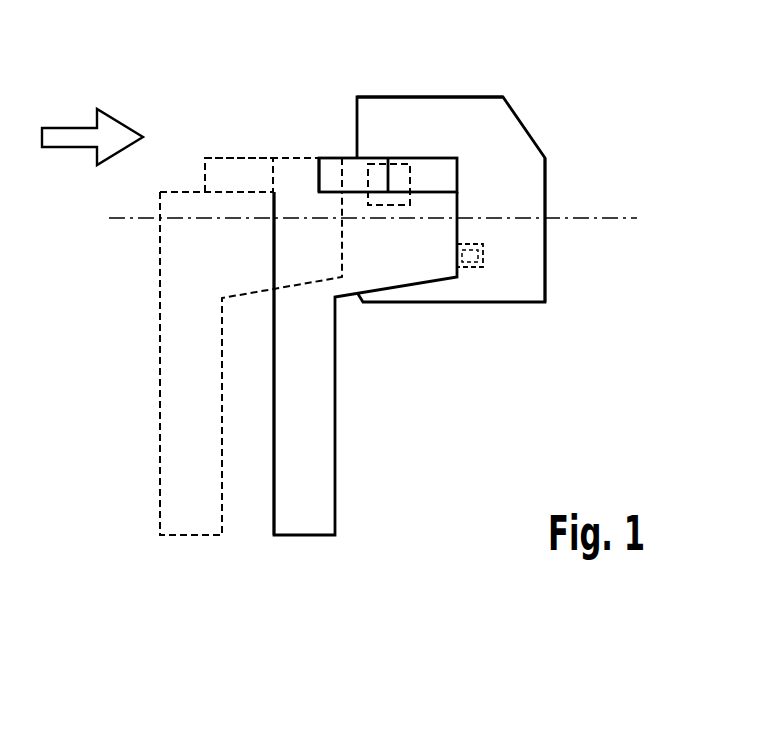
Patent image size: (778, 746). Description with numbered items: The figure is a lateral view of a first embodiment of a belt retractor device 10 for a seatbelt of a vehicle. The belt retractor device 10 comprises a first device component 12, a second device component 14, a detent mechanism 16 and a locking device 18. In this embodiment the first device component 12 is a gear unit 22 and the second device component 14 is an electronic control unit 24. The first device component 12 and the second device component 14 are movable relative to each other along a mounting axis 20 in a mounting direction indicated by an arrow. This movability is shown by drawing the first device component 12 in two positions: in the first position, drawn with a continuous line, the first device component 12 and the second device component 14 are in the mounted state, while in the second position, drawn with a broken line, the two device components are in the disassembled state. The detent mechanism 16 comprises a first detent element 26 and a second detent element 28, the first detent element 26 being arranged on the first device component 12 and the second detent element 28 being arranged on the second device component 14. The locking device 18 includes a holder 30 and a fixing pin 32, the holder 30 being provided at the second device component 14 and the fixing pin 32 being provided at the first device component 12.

The belt retractor device 10 is at (560, 76).
The first device component 12 is at (318, 448).
The second device component 14 is at (480, 118).
The detent mechanism 16 is at (290, 128).
The locking device 18 is at (510, 265).
The mounting axis 20 is at (622, 217).
The gear unit 22 is at (318, 400).
The electronic control unit 24 is at (422, 118).
The first detent element 26 is at (227, 168).
The second detent element 28 is at (410, 178).
The holder 30 is at (486, 248).
The fixing pin 32 is at (470, 258).